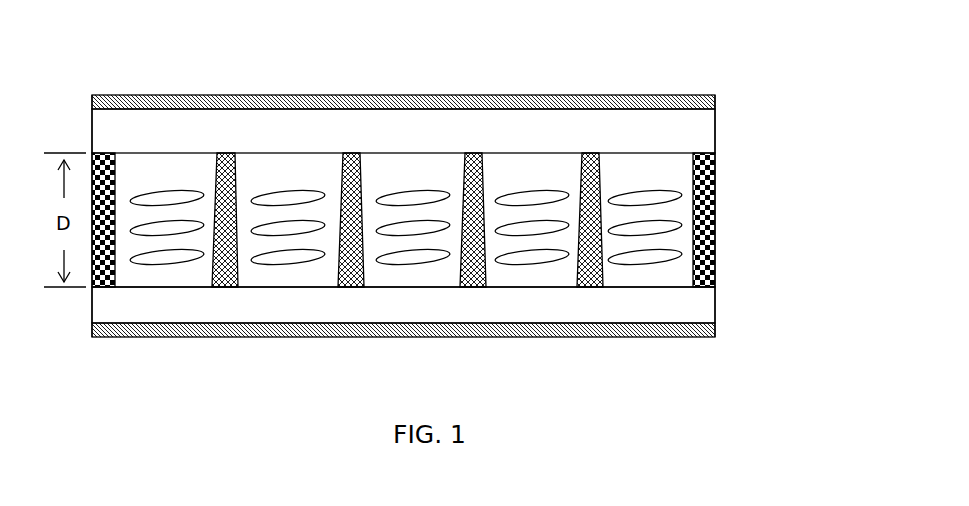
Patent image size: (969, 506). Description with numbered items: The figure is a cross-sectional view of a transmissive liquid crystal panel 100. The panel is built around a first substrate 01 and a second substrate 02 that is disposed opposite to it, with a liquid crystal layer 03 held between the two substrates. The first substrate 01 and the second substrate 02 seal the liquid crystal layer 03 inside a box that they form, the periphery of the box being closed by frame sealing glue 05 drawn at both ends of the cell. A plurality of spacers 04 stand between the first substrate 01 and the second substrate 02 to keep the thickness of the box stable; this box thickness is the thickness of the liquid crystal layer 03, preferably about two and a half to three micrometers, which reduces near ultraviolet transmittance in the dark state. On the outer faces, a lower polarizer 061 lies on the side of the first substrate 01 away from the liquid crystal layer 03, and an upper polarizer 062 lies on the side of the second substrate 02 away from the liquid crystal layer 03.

The transmissive liquid crystal panel 100 is at (436, 42).
The upper polarizer 062 is at (485, 96).
The second substrate 02 is at (532, 140).
The spacers 04 is at (604, 152).
The liquid crystal layer 03 is at (650, 245).
The frame sealing glue 05 is at (708, 235).
The first substrate 01 is at (668, 313).
The lower polarizer 061 is at (716, 330).